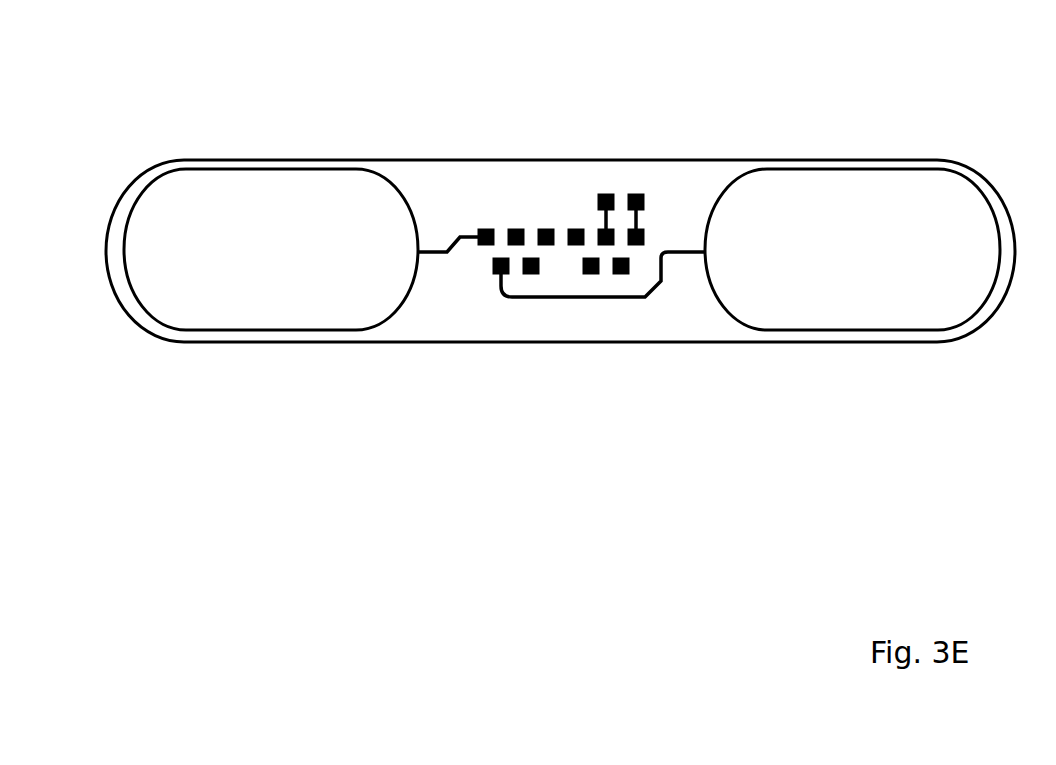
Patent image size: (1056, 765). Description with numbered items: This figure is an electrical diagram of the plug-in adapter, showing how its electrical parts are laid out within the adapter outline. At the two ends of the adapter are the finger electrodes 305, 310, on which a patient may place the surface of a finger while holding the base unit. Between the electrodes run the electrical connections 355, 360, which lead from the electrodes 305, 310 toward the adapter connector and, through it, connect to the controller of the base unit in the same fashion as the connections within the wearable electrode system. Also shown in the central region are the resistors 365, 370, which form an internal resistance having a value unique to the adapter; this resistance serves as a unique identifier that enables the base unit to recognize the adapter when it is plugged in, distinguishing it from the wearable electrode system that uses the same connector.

The finger electrode 305 is at (283, 311).
The finger electrode 310 is at (873, 308).
The electrical connection 355 is at (481, 230).
The electrical connection 360 is at (497, 276).
The resistor 365 is at (598, 204).
The resistor 370 is at (639, 213).